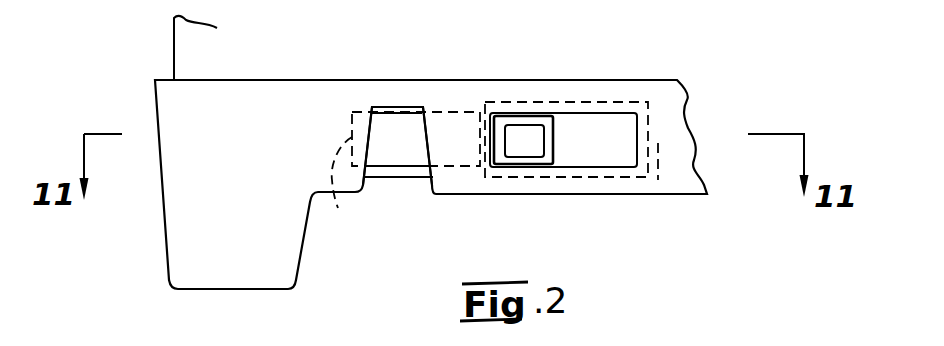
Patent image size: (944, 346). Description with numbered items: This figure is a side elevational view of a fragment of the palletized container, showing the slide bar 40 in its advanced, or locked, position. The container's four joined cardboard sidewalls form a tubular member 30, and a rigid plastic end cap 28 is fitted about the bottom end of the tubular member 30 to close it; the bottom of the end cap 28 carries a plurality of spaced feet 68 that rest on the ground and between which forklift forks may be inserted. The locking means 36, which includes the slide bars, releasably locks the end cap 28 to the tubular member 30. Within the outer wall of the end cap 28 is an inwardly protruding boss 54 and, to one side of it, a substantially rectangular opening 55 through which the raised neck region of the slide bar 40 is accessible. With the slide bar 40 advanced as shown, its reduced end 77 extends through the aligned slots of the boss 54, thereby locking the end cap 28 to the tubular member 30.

The end cap 28 is at (180, 184).
The tubular member 30 is at (192, 45).
The locking means 36 is at (386, 241).
The slide bar 40 is at (402, 125).
The boss 54 is at (397, 171).
The rectangular opening 55 is at (605, 163).
The feet 68 is at (167, 261).
The slide bar end 77 is at (348, 187).